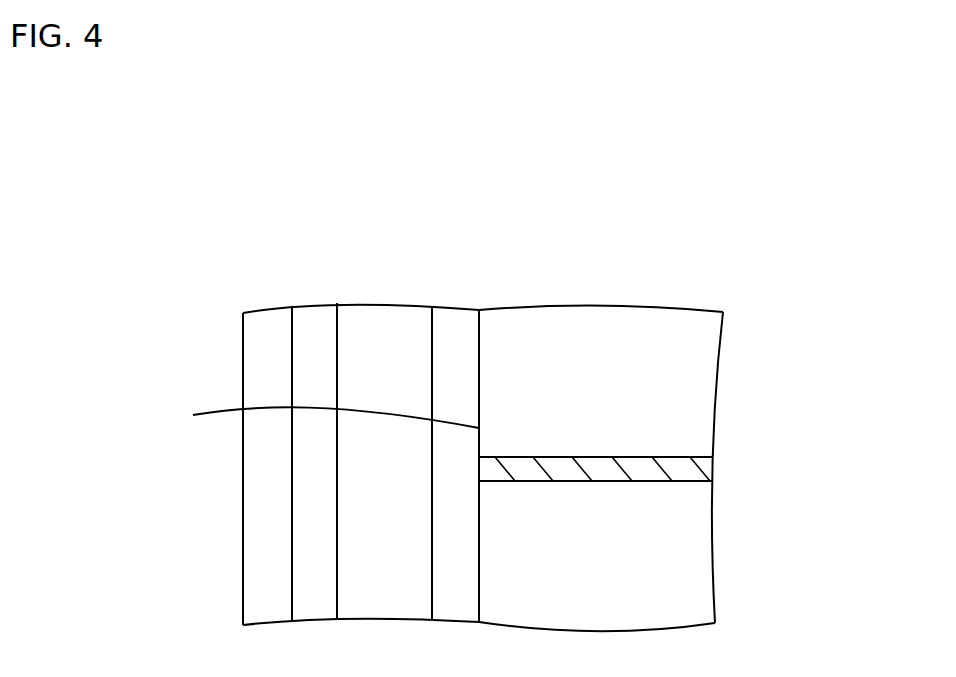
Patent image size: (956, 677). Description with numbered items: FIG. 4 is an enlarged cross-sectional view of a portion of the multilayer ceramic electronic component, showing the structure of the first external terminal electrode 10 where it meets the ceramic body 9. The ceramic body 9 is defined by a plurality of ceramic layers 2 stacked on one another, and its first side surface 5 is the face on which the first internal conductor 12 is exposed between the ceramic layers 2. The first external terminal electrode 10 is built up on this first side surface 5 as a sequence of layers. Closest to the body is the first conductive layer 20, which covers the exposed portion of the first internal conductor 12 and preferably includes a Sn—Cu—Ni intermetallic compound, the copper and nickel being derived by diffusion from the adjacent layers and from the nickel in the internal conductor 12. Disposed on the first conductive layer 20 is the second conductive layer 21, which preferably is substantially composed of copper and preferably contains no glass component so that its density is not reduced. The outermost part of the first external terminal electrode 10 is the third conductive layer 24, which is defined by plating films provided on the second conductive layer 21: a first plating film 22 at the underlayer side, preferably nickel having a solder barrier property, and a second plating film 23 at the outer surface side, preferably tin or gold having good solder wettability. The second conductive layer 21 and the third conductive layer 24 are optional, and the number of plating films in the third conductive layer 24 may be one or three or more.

The ceramic body 9 is at (682, 295).
The first external terminal electrode 10 is at (290, 163).
The third conductive layer 24 is at (258, 227).
The second plating film 23 is at (265, 328).
The first plating film 22 is at (312, 326).
The second conductive layer 21 is at (385, 322).
The first conductive layer 20 is at (457, 322).
The first side surface 5 is at (323, 411).
The ceramic layers 2 is at (688, 360).
The first internal conductor 12 is at (693, 468).